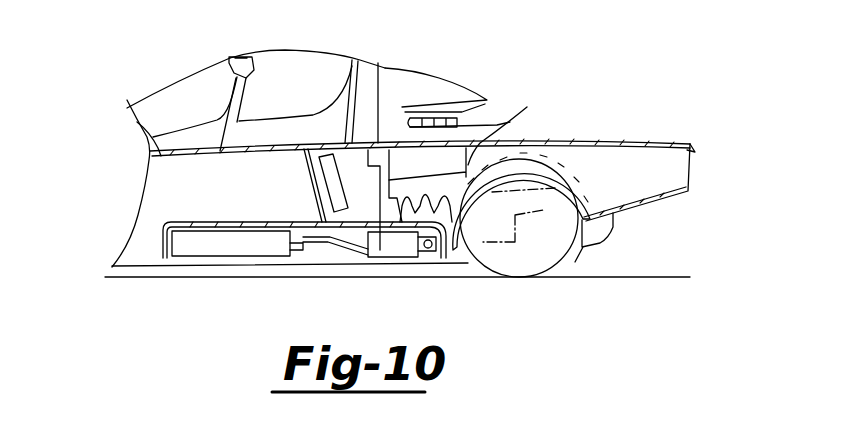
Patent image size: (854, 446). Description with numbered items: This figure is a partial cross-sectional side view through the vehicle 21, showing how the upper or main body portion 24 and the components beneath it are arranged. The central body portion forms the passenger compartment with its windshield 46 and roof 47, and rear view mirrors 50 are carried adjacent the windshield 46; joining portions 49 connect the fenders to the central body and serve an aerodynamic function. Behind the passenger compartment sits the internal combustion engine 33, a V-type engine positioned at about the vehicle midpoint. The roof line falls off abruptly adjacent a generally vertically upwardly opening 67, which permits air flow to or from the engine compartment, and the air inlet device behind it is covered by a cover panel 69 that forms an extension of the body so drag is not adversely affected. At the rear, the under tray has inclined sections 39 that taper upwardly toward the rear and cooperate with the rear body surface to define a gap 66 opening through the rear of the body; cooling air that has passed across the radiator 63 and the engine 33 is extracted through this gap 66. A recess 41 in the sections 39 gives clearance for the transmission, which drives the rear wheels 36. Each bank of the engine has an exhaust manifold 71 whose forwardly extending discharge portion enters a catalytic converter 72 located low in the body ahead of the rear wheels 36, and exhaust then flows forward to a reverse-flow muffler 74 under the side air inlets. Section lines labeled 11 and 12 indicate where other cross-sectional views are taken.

The vehicle 21 is at (386, 42).
The upper or main body portion 24 is at (327, 52).
The windshield 46 is at (177, 101).
The roof 47 is at (302, 60).
The rear view mirrors 50 is at (241, 62).
The joining portions 49 is at (135, 128).
The cover panel 69 is at (437, 88).
The vertically upwardly opening 67 is at (482, 118).
The internal combustion engine 33 is at (530, 106).
The gap 66 is at (692, 148).
The inclined sections 39 is at (645, 198).
The recess 41 is at (594, 231).
The rear wheels 36 is at (557, 263).
The muffler 74 is at (240, 245).
The cooling radiator 63 is at (338, 220).
The catalytic converters 72 is at (405, 242).
The exhaust manifold 71 is at (428, 252).
The section line 12 is at (123, 190).
The section line 11 is at (108, 243).